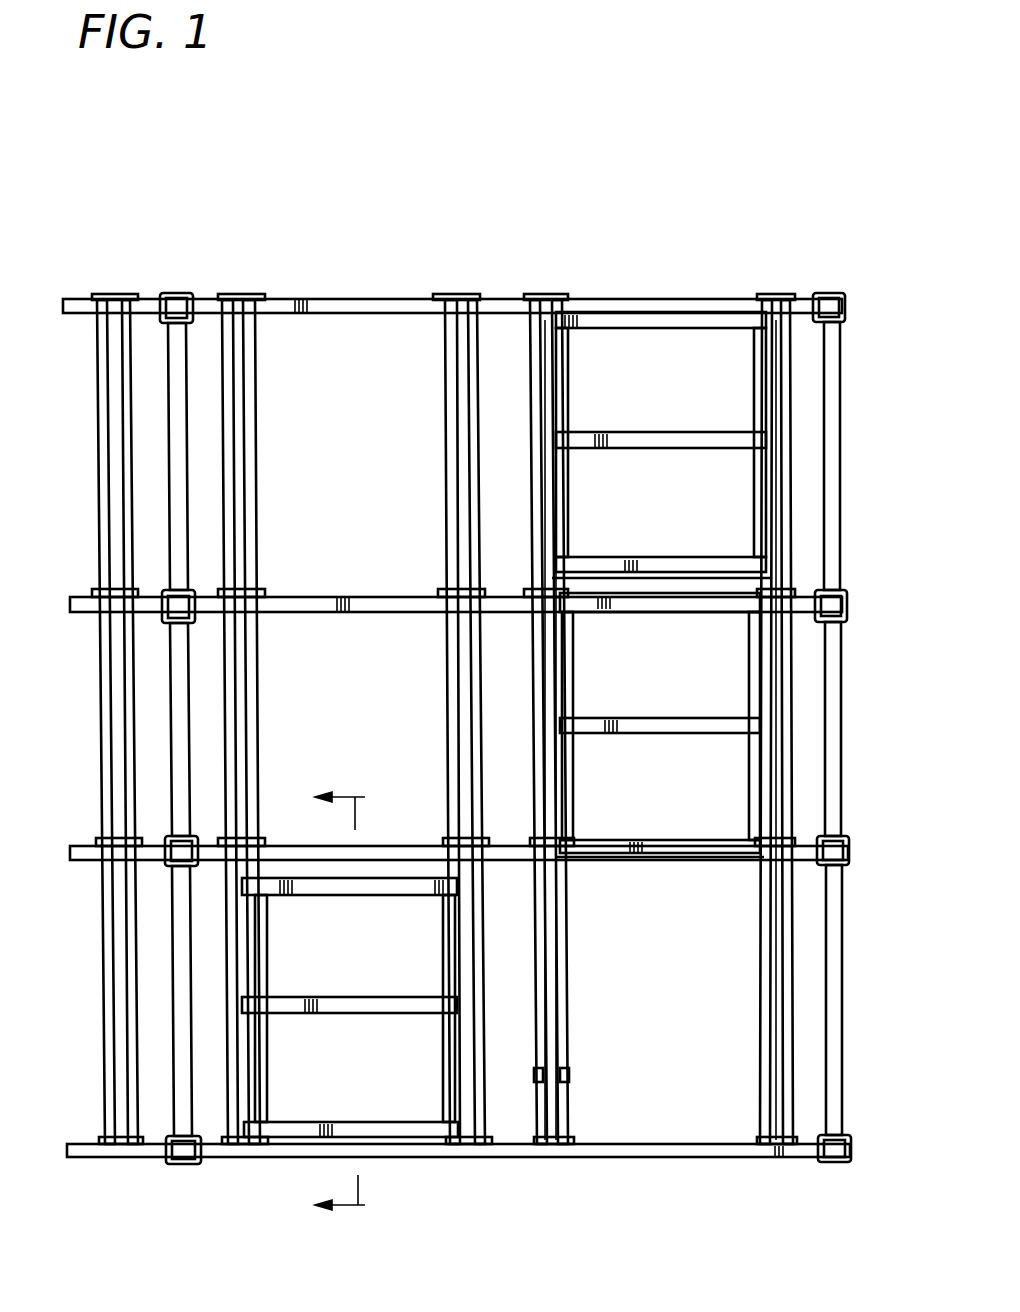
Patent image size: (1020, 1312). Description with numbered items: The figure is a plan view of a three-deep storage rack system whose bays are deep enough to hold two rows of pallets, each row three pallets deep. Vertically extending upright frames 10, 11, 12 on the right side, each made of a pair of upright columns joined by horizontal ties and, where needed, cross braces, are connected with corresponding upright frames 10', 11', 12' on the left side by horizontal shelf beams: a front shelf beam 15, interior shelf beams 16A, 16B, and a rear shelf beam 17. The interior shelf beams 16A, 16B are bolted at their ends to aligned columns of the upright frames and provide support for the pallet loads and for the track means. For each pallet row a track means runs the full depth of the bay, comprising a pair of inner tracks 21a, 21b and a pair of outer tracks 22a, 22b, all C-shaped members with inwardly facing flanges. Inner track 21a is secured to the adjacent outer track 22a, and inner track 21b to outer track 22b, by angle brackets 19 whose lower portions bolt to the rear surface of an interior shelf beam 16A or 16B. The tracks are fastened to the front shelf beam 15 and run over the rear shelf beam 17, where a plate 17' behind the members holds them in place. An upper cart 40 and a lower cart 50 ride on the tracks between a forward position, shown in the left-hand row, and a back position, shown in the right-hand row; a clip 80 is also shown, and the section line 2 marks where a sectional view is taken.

The upright frame 10 is at (874, 1000).
The upright frame 11 is at (876, 729).
The upright frame 12 is at (874, 456).
The upright frame 10' is at (117, 1001).
The upright frame 11' is at (114, 729).
The upright frame 12' is at (112, 456).
The front shelf beam 15 is at (640, 1157).
The interior shelf beam 16A is at (400, 848).
The interior shelf beam 16B is at (360, 556).
The rear shelf beam 17 is at (452, 271).
The plate 17' is at (220, 261).
The angle bracket 19 is at (264, 840).
The inner track 21a is at (253, 408).
The inner track 21b is at (448, 352).
The outer track 22a is at (232, 510).
The outer track 22b is at (478, 445).
The upper cart 40 is at (768, 718).
The lower cart 50 is at (762, 440).
The clip 80 is at (570, 1078).
The section line 2- 2 is at (354, 1003).